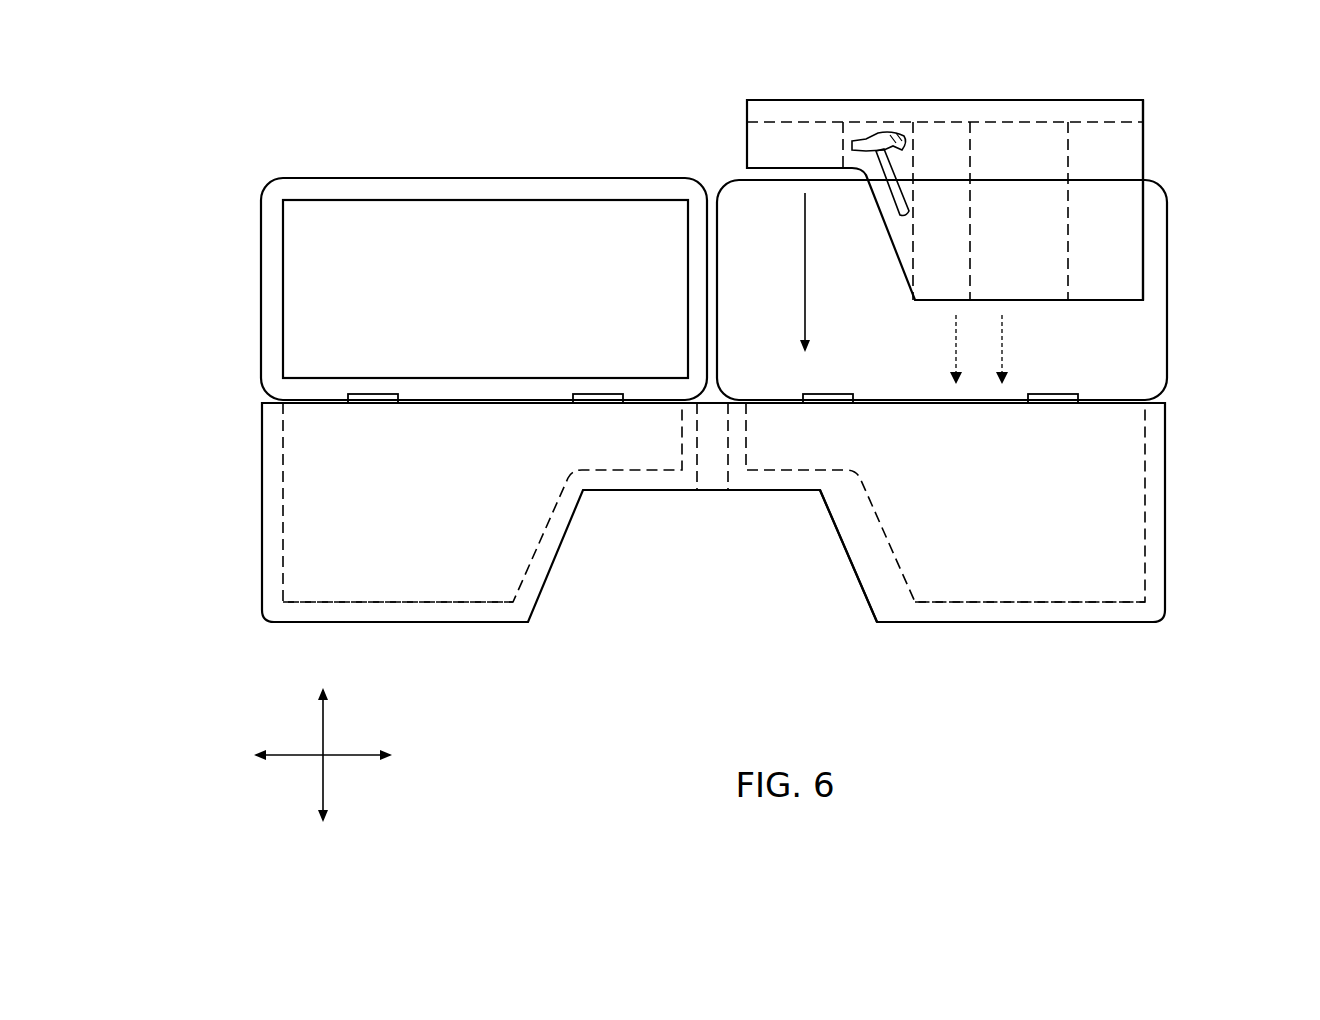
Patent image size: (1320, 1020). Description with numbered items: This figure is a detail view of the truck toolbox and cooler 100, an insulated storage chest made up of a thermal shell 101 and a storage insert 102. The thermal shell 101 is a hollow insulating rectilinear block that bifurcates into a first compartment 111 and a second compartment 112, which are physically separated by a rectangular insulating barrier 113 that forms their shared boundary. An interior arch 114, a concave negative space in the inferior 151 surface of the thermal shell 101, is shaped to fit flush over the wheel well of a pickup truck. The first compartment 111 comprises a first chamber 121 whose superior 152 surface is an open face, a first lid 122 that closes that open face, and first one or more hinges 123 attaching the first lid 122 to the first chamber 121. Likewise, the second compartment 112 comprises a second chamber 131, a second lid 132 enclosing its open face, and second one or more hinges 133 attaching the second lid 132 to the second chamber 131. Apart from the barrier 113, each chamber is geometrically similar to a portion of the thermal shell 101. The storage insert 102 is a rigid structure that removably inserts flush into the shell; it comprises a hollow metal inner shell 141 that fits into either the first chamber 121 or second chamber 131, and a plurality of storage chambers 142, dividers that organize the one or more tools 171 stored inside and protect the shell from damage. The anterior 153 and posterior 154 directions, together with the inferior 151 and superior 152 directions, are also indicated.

The truck toolbox and cooler 100 is at (252, 147).
The thermal shell 101 is at (250, 490).
The storage insert 102 is at (1110, 98).
The first compartment 111 is at (262, 542).
The second compartment 112 is at (1167, 545).
The barrier 113 is at (715, 482).
The interior arch 114 is at (798, 542).
The first chamber 121 is at (447, 587).
The first lid 122 is at (395, 220).
The first one or more hinges 123 is at (600, 398).
The second chamber 131 is at (1005, 547).
The second lid 132 is at (1143, 351).
The second one or more hinges 133 is at (843, 400).
The inner shell 141 is at (1145, 141).
The plurality of storage chambers 142 is at (1010, 143).
The inferior direction 151 is at (322, 811).
The superior direction 152 is at (316, 700).
The anterior direction 153 is at (389, 755).
The posterior direction 154 is at (253, 755).
The one or more tools 171 is at (880, 137).